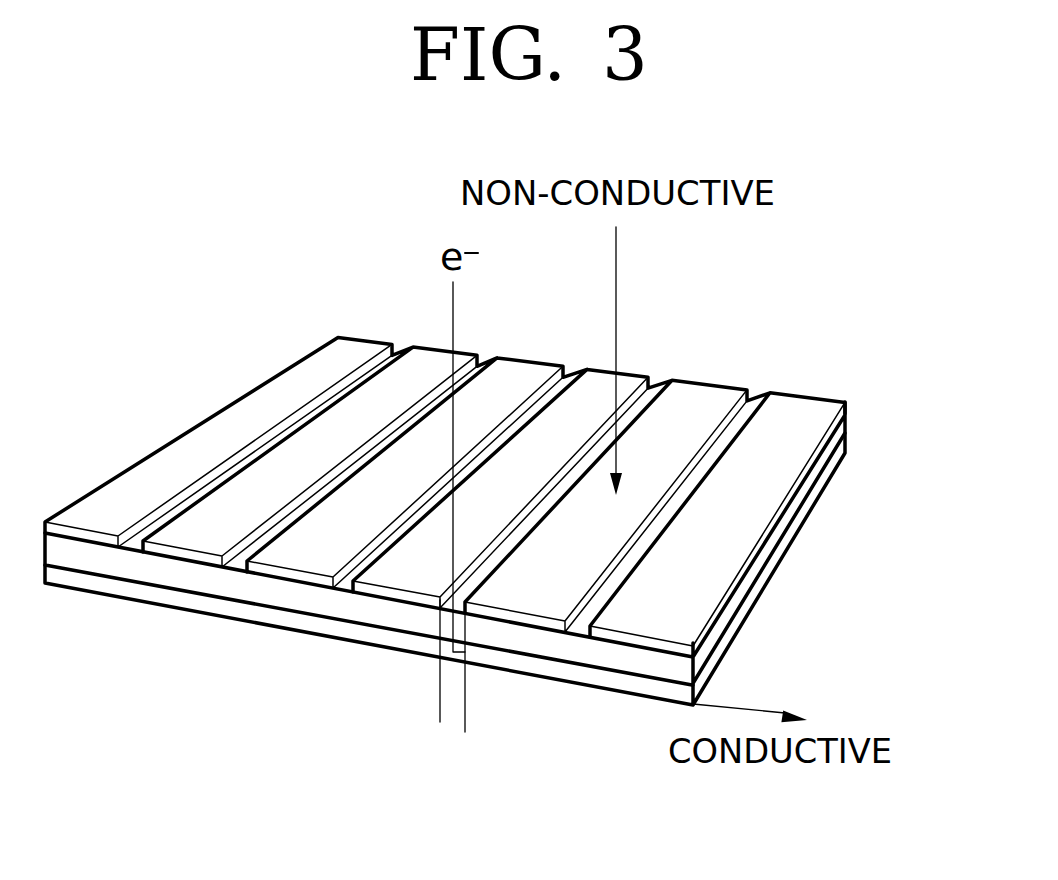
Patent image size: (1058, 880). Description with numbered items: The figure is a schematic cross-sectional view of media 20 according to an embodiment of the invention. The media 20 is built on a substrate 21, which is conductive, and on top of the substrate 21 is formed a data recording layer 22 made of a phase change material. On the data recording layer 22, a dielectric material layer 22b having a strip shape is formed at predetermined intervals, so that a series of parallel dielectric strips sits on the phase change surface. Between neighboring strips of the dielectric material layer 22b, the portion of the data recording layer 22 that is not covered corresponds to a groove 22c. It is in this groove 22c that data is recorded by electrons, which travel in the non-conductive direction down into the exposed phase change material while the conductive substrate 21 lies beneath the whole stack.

The media 20 is at (496, 484).
The substrate 21 is at (792, 540).
The data recording layer 22 is at (800, 502).
The dielectric material layer 22b is at (703, 386).
The groove 22c is at (477, 725).